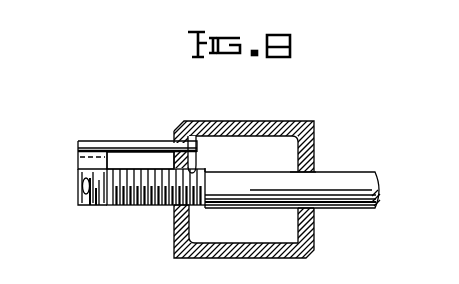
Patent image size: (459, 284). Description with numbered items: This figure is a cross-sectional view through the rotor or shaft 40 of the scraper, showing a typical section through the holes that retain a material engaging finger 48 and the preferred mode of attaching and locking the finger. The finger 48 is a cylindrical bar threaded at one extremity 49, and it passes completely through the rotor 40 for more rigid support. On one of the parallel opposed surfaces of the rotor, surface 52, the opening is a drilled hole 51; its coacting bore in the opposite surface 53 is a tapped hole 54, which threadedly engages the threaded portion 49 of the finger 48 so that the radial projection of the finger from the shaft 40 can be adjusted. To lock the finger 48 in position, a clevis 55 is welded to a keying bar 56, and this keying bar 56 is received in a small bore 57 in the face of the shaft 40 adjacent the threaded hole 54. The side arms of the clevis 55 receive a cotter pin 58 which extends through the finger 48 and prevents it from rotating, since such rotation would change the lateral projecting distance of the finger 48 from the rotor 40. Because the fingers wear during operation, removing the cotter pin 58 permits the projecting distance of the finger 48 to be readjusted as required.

The shaft 40 is at (247, 121).
The material engaging finger 48 is at (344, 172).
The threaded extremity 49 is at (139, 205).
The hole 51 is at (296, 178).
The surface 52 is at (315, 222).
The opposite surface 53 is at (173, 229).
The tapped hole 54 is at (198, 168).
The clevis 55 is at (78, 158).
The keying bar 56 is at (107, 141).
The small bore 57 is at (205, 140).
The cotter pin 58 is at (80, 198).